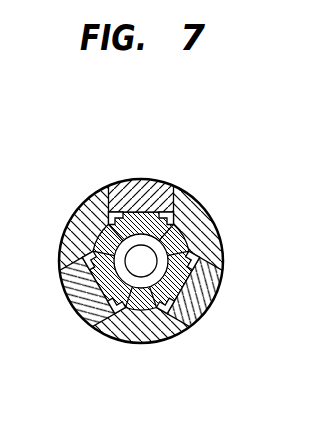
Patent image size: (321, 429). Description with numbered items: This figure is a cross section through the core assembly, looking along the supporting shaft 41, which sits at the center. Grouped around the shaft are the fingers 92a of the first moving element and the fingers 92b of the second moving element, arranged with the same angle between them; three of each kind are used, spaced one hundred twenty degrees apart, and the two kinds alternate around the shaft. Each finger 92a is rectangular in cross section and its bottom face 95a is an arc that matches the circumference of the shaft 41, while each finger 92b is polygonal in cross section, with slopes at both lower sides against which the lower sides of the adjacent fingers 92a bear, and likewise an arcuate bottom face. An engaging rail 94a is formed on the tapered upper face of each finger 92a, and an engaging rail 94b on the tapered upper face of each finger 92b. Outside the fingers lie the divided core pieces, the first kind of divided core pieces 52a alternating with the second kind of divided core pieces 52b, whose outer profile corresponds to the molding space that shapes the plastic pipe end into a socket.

The supporting shaft 41 is at (188, 222).
The first kind of divided core pieces 52a is at (125, 177).
The second kind of divided core pieces 52b is at (72, 236).
The fingers of first moving element 92a is at (102, 240).
The fingers of second moving element 92b is at (167, 212).
The engaging rail 94a is at (182, 223).
The engaging rail 94b is at (152, 210).
The bottom face 95a is at (185, 282).